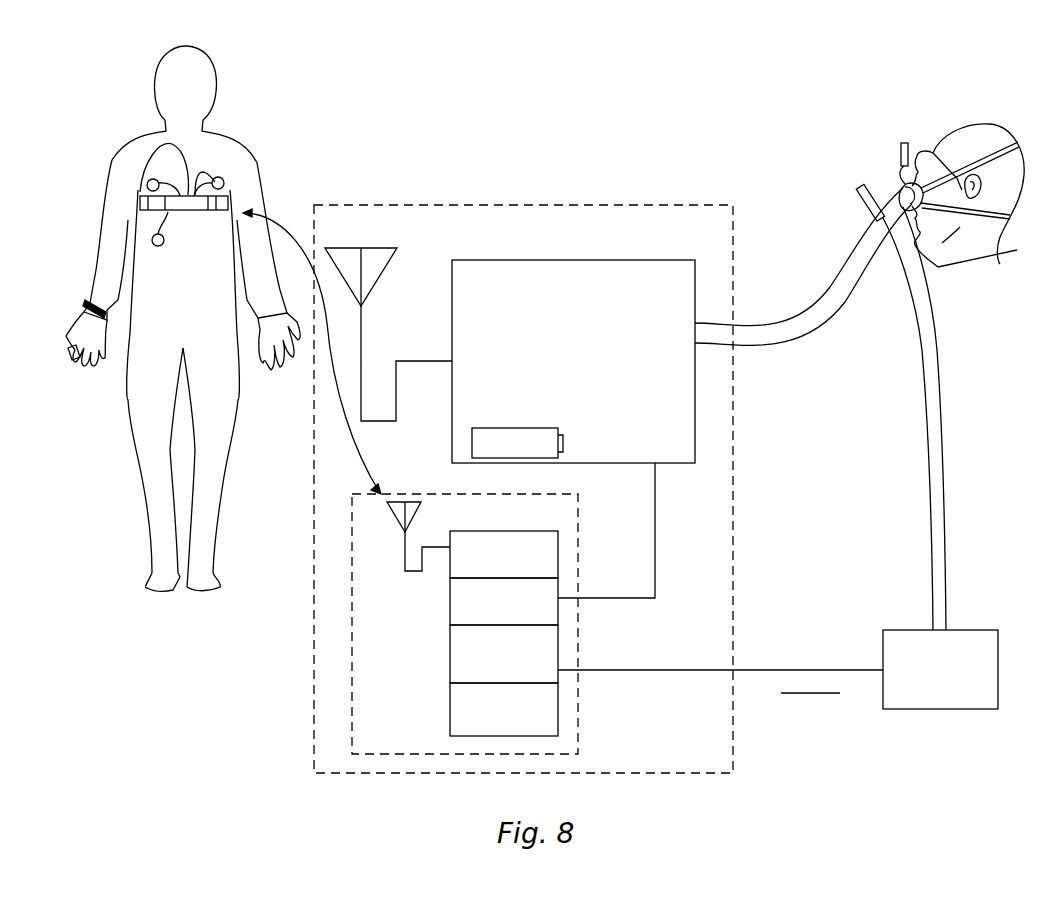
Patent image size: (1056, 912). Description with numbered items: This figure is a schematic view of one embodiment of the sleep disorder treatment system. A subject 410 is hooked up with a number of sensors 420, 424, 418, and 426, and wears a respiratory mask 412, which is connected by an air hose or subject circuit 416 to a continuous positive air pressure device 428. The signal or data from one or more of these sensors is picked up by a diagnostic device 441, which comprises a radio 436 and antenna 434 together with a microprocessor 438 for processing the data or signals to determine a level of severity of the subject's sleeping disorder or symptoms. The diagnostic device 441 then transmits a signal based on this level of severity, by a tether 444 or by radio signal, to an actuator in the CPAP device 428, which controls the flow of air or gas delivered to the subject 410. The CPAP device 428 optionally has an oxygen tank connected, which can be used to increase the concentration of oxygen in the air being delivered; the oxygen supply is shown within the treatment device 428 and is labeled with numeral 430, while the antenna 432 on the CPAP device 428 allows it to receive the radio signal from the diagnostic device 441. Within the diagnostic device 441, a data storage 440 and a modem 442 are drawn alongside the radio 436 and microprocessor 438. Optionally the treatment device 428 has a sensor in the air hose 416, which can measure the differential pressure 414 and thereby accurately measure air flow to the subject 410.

The subject 410 is at (195, 65).
The respiratory mask 412 is at (900, 184).
The differential pressure 414 is at (993, 699).
The air hose 416 is at (812, 313).
The sensor 418 is at (899, 150).
The sensors 420 is at (170, 165).
The sensor 424 is at (71, 362).
The sensor 426 is at (216, 212).
The continuous positive air pressure device 428 is at (522, 248).
The oxygen concentrator 430 is at (488, 458).
The CPAP antenna 432 is at (388, 275).
The antenna 434 is at (388, 520).
The radio 436 is at (447, 568).
The microprocessor 438 is at (447, 609).
The data storage 440 is at (447, 658).
The diagnostic device 441 is at (583, 706).
The modem 442 is at (447, 703).
The tether 444 is at (633, 610).